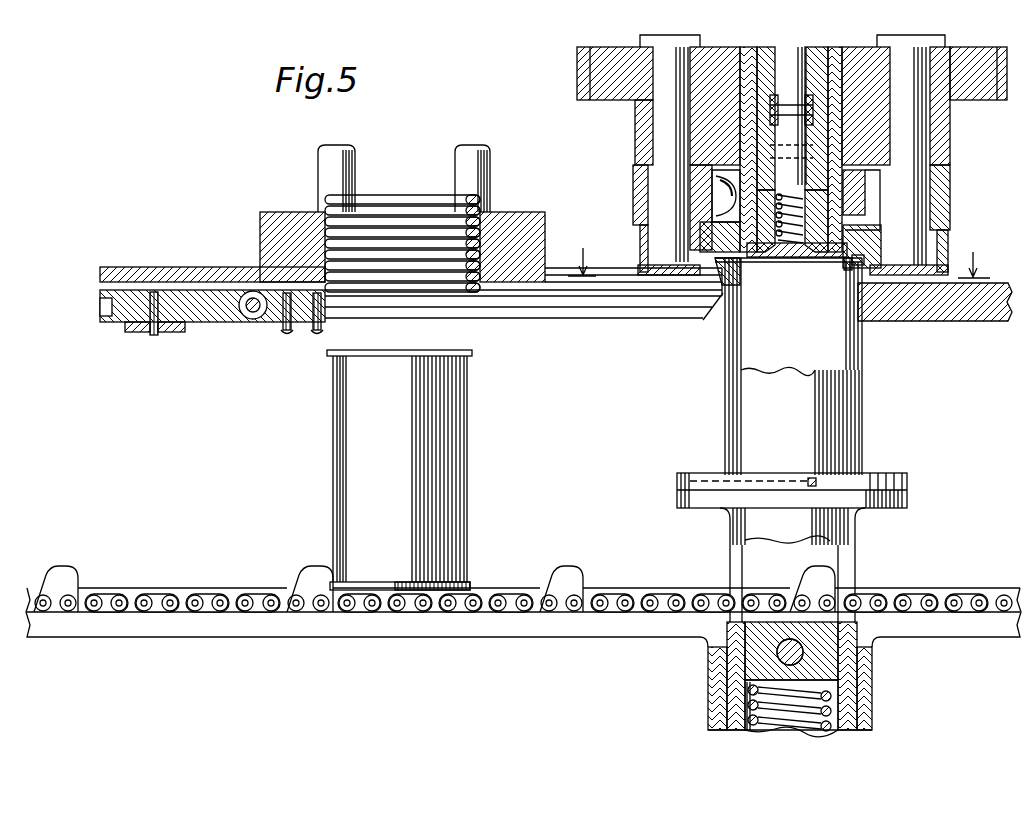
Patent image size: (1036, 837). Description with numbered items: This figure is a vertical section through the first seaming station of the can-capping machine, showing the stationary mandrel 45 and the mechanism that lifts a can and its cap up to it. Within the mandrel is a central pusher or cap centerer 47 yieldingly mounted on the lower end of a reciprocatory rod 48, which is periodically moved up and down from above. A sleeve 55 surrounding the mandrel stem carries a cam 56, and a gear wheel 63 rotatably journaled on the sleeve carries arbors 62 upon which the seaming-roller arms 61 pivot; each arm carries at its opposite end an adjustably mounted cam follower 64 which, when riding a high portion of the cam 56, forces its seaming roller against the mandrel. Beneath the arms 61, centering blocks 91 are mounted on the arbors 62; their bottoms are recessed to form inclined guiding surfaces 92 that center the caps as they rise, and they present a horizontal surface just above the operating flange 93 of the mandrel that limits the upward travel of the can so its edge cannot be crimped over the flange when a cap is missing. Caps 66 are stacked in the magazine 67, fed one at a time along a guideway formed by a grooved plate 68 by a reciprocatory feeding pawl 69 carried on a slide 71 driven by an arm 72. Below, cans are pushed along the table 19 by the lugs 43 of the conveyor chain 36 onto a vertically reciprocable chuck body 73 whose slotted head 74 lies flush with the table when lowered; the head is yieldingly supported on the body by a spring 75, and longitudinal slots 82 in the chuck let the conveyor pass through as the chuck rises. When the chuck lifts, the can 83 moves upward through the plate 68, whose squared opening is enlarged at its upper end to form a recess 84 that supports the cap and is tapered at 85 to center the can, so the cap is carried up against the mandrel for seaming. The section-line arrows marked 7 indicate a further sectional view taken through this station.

The section line 7- 7 is at (773, 263).
The table 19 is at (352, 638).
The conveyor chain 36 is at (170, 600).
The lugs 43 is at (60, 570).
The mandrel 45 is at (797, 262).
The pusher or cap centerer 47 is at (808, 258).
The reciprocatory rod 48 is at (791, 52).
The sleeve 55 is at (840, 50).
The cam 56 is at (866, 187).
The arm 61 is at (637, 186).
The arbor 62 is at (655, 128).
The gear wheel 63 is at (990, 76).
The cam follower 64 is at (712, 195).
The can caps 66 is at (398, 196).
The magazine 67 is at (497, 216).
The grooved plate 68 is at (613, 290).
The feeding pawl 69 is at (278, 305).
The slide 71 is at (205, 293).
The arm 72 is at (168, 334).
The chuck body 73 is at (852, 544).
The slotted head 74 is at (683, 474).
The spring 75 is at (788, 728).
The longitudinal slots 82 is at (855, 573).
The can 83 is at (862, 420).
The recess 84 is at (858, 300).
The tapered portion 85 is at (870, 322).
The centering blocks 91 is at (702, 238).
The inclined guiding surfaces 92 is at (735, 272).
The operating flange 93 is at (850, 266).